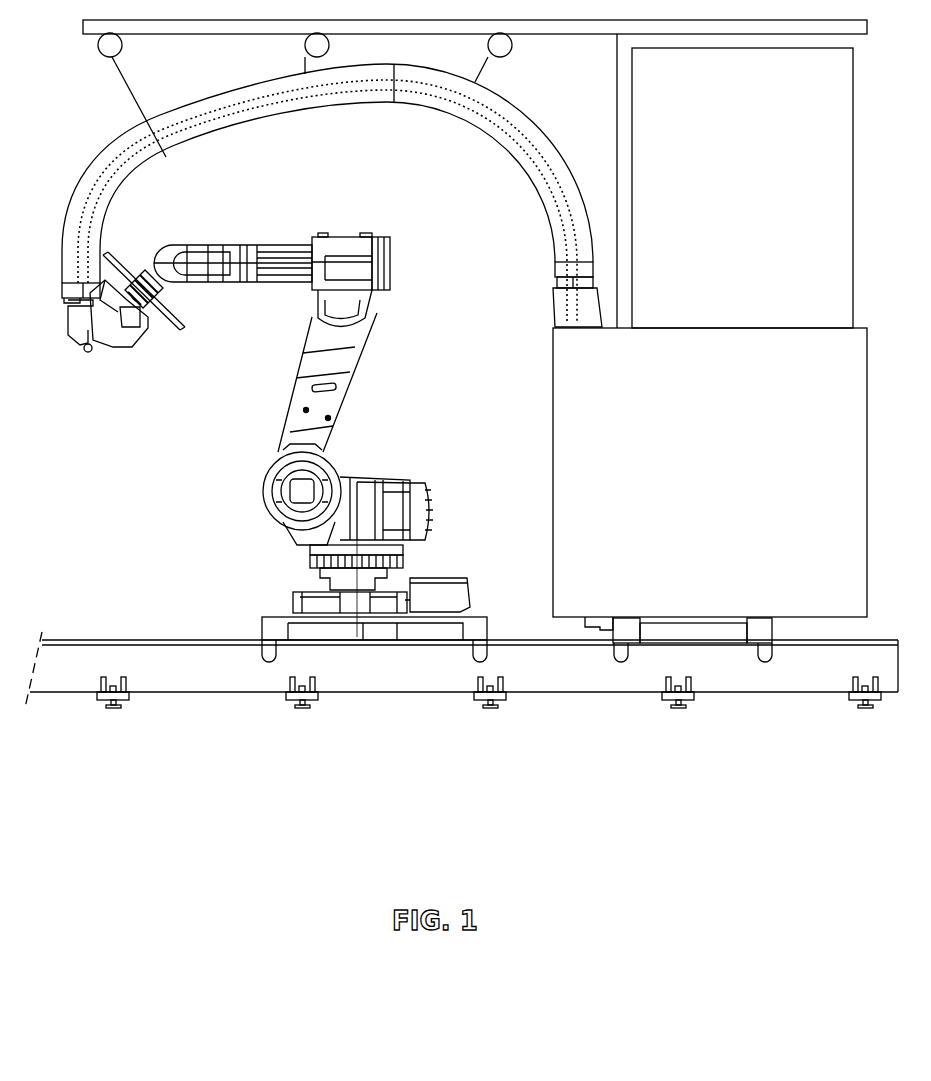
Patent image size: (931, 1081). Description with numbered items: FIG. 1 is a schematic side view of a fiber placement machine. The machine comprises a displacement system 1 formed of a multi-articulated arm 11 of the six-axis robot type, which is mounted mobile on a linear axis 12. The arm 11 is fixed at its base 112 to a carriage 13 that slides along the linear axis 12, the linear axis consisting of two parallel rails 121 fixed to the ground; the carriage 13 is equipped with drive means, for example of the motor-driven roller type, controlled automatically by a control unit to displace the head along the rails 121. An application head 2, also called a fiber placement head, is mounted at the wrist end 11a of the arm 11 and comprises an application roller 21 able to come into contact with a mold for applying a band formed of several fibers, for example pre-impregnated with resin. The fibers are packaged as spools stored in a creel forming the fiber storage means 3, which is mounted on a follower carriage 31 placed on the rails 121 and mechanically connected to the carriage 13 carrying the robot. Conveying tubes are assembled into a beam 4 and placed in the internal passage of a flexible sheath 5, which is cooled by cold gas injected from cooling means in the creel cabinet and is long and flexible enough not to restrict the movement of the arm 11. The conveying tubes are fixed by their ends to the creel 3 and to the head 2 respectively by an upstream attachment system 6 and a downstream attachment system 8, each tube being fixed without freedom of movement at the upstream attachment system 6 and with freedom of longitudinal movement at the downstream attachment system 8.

The displacement system 1 is at (286, 435).
The multi-articulated arm 11 is at (300, 390).
The wrist end 11a is at (165, 292).
The base 112 is at (300, 594).
The linear axis 12 is at (461, 690).
The rails 121 is at (244, 693).
The carriage 13 is at (268, 632).
The application head 2 is at (114, 344).
The application roller 21 is at (85, 352).
The fiber storage means 3 is at (740, 336).
The follower carriage 31 is at (620, 632).
The cable guide arch 4 is at (311, 193).
The flexible sheath 5 is at (67, 225).
The upstream attachment system 6 is at (562, 322).
The downstream attachment system 8 is at (66, 296).